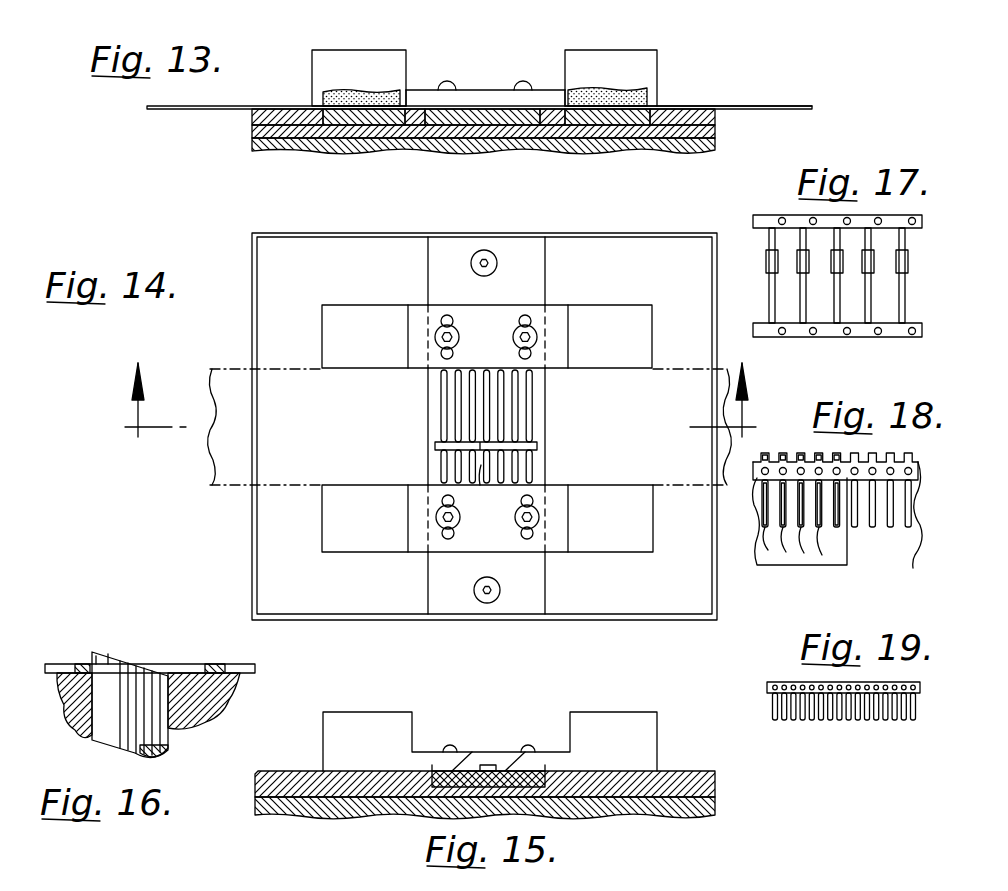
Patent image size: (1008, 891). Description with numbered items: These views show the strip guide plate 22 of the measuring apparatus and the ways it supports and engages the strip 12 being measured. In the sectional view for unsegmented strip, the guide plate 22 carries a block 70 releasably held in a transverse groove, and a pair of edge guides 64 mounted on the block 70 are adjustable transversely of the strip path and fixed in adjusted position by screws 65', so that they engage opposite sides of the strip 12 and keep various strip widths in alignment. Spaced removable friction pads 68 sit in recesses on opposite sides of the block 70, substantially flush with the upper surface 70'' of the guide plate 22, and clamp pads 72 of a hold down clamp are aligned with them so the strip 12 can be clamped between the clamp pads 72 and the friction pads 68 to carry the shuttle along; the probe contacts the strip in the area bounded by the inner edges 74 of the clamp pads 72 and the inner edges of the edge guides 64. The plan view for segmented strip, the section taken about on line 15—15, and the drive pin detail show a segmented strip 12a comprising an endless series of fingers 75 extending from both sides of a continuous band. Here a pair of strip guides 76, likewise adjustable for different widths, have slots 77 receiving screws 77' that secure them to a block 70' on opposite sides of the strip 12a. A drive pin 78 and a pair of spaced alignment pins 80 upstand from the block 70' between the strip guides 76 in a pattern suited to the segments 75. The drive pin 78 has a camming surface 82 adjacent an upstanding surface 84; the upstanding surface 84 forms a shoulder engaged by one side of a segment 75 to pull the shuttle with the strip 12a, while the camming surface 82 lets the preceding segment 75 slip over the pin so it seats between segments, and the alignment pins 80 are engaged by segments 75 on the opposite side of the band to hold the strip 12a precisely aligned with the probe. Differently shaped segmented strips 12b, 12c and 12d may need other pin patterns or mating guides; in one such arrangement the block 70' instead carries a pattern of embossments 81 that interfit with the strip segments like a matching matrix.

In FIG. 13, the strip 12 is at (160, 109).
In FIG. 14, the segmented strip 12a is at (435, 432).
In FIG. 16, the segmented strip 12a is at (183, 664).
In FIG. 17, the segmented strip 12b is at (773, 215).
In FIG. 18, the segmented strip 12c is at (906, 530).
In FIG. 19, the segmented strip 12d is at (778, 682).
In FIG. 14, the section line 15 is at (437, 424).
In FIG. 13, the strip guide plate 22 is at (255, 120).
In FIG. 14, the strip guide plate 22 is at (262, 322).
In FIG. 15, the strip guide plate 22 is at (715, 776).
In FIG. 13, the edge guide 64 is at (478, 90).
In FIG. 13, the screws 65' is at (485, 60).
In FIG. 13, the friction pads 68 is at (350, 125).
In FIG. 13, the block 70 is at (483, 149).
In FIG. 14, the block 70' is at (447, 425).
In FIG. 18, the block 70' is at (819, 542).
In FIG. 16, the block 70' is at (168, 705).
In FIG. 15, the block 70' is at (528, 755).
In FIG. 13, the upper surface 70'' is at (734, 74).
In FIG. 13, the clamp pads 72 is at (341, 90).
In FIG. 13, the inner edges 74 is at (412, 90).
In FIG. 14, the fingers 75 is at (535, 458).
In FIG. 16, the fingers 75 is at (75, 664).
In FIG. 14, the strip guides 76 is at (413, 305).
In FIG. 15, the strip guides 76 is at (422, 752).
In FIG. 14, the slots 77 is at (491, 428).
In FIG. 15, the slots 77 is at (508, 713).
In FIG. 14, the screws 77' is at (494, 427).
In FIG. 14, the drive pin 78 is at (481, 485).
In FIG. 16, the drive pin 78 is at (118, 664).
In FIG. 15, the drive pin 78 is at (496, 765).
In FIG. 14, the alignment pins 80 is at (444, 410).
In FIG. 15, the alignment pins 80 is at (522, 752).
In FIG. 18, the embossments 81 is at (838, 453).
In FIG. 16, the camming surface 82 is at (110, 662).
In FIG. 16, the upstanding surface 84 is at (96, 664).